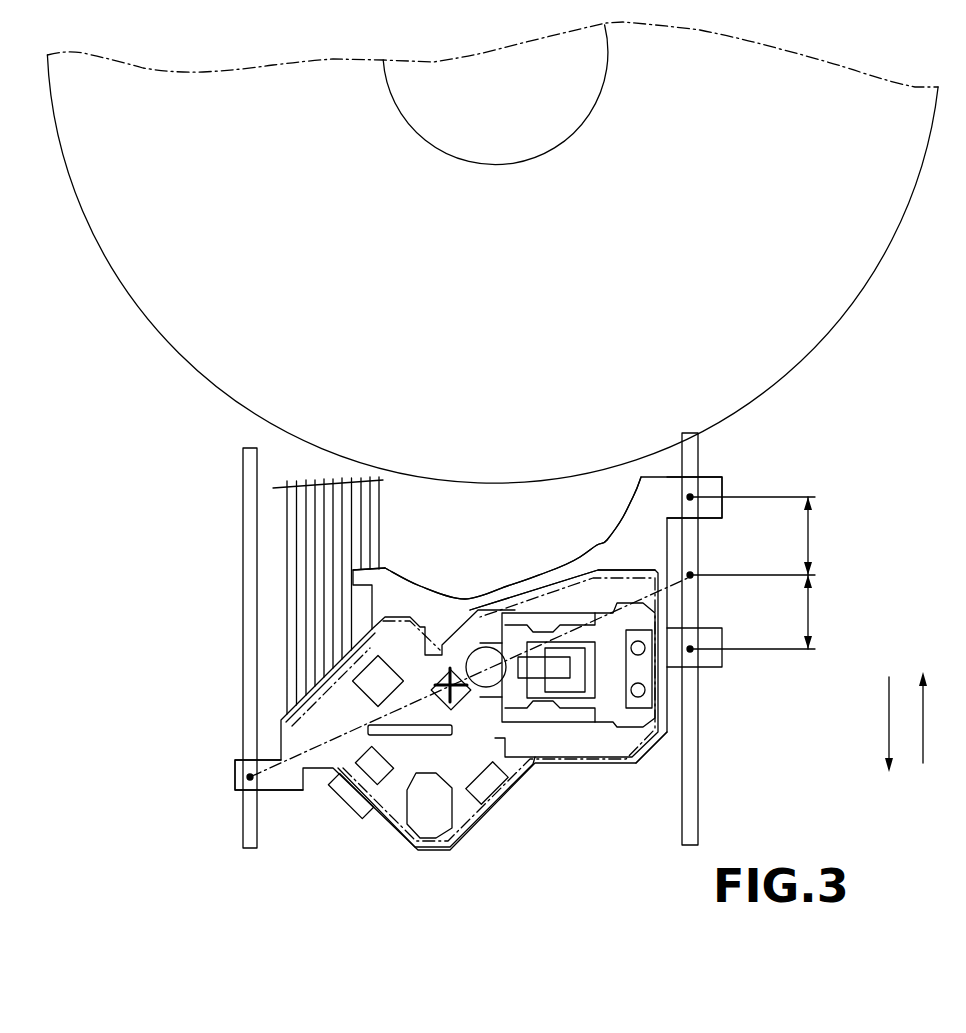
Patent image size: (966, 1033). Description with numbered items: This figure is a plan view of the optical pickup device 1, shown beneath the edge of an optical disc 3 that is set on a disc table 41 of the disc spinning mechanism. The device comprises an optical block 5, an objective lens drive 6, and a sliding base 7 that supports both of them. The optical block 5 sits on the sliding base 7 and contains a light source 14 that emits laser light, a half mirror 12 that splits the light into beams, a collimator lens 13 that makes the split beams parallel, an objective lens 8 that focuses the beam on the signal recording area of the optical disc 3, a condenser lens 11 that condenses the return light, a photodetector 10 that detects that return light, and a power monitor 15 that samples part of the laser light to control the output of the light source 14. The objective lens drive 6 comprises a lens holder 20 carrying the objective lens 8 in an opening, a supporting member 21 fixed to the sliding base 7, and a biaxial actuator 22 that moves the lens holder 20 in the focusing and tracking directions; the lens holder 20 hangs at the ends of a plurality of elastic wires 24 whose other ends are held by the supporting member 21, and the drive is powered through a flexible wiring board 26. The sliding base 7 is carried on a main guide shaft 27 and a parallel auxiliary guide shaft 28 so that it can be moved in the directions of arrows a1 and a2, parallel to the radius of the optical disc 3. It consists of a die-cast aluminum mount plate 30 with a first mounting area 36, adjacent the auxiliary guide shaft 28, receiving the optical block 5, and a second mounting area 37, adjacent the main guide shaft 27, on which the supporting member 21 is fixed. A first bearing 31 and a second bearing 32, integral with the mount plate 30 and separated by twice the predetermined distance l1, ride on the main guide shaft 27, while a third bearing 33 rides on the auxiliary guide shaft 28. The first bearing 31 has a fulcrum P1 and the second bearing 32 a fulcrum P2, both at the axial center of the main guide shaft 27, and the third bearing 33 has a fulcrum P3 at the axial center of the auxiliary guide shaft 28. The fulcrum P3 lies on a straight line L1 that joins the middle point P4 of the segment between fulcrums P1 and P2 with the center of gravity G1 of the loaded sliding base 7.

The optical pickup device 1 is at (227, 584).
The optical disc 3 is at (870, 300).
The disc table 41 is at (588, 95).
The optical block 5 is at (418, 784).
The objective lens drive 6 is at (624, 557).
The sliding base 7 is at (458, 605).
The objective lens 8 is at (517, 727).
The photodetector 10 is at (345, 797).
The condenser lens 11 is at (378, 814).
The half mirror 12 is at (442, 734).
The collimator lens 13 is at (466, 715).
The light source 14 is at (352, 688).
The power monitor 15 is at (466, 806).
The lens holder 20 is at (663, 740).
The supporting member 21 is at (640, 668).
The biaxial actuator 22 is at (590, 680).
The elastic wires 24 is at (570, 725).
The flexible wiring board 26 is at (360, 538).
The main guide shaft 27 is at (690, 798).
The auxiliary guide shaft 28 is at (246, 847).
The mount plate 30 is at (550, 586).
The first bearing 31 is at (715, 477).
The second bearing 32 is at (712, 634).
The third bearing 33 is at (237, 786).
The first mounting area 36 is at (483, 812).
The second mounting area 37 is at (650, 748).
The center of gravity G1 is at (445, 678).
The straight line L1 is at (292, 790).
The fulcrum of first bearing P1 is at (692, 499).
The fulcrum of second bearing P2 is at (692, 651).
The fulcrum of third bearing P3 is at (246, 772).
The middle point P4 is at (692, 577).
The predetermined distance l1 is at (818, 573).
The arrow a1 is at (922, 734).
The arrow a2 is at (887, 708).